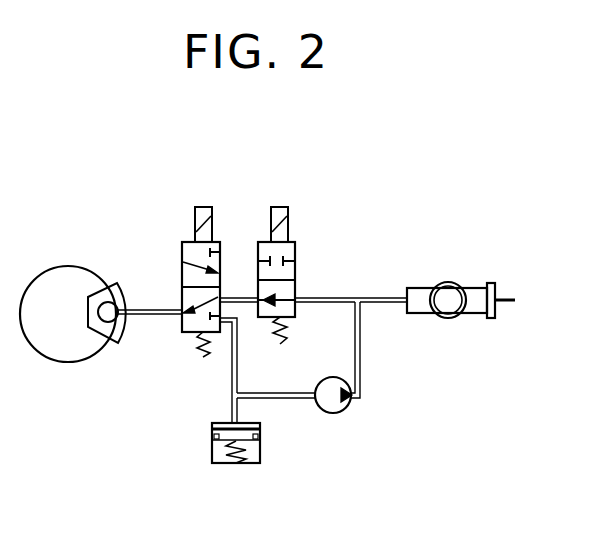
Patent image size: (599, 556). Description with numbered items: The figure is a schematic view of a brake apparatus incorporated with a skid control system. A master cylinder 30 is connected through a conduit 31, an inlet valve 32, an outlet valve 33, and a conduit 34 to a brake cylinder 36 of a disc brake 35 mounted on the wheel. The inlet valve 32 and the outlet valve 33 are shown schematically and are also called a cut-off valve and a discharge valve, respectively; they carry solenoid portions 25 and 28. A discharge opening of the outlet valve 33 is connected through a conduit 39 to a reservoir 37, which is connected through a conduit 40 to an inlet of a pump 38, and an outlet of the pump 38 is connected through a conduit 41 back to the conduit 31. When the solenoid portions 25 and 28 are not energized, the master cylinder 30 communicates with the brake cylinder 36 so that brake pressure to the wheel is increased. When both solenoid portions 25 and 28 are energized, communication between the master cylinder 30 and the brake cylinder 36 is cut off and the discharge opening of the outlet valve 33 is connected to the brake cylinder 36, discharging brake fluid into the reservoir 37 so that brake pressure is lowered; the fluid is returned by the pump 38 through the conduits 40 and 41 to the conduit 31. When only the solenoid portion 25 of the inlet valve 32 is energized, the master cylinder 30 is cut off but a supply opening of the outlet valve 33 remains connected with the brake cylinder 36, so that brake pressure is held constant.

The solenoid portion 25 is at (280, 206).
The solenoid portion 28 is at (207, 206).
The master cylinder 30 is at (422, 289).
The conduit 31 is at (381, 298).
The inlet valve 32 is at (297, 268).
The outlet valve 33 is at (220, 262).
The conduit 34 is at (153, 309).
The disc brake 35 is at (68, 266).
The brake cylinder 36 is at (115, 283).
The reservoir 37 is at (232, 466).
The pump 38 is at (345, 412).
The conduit 39 is at (232, 386).
The conduit 40 is at (297, 399).
The conduit 41 is at (363, 391).